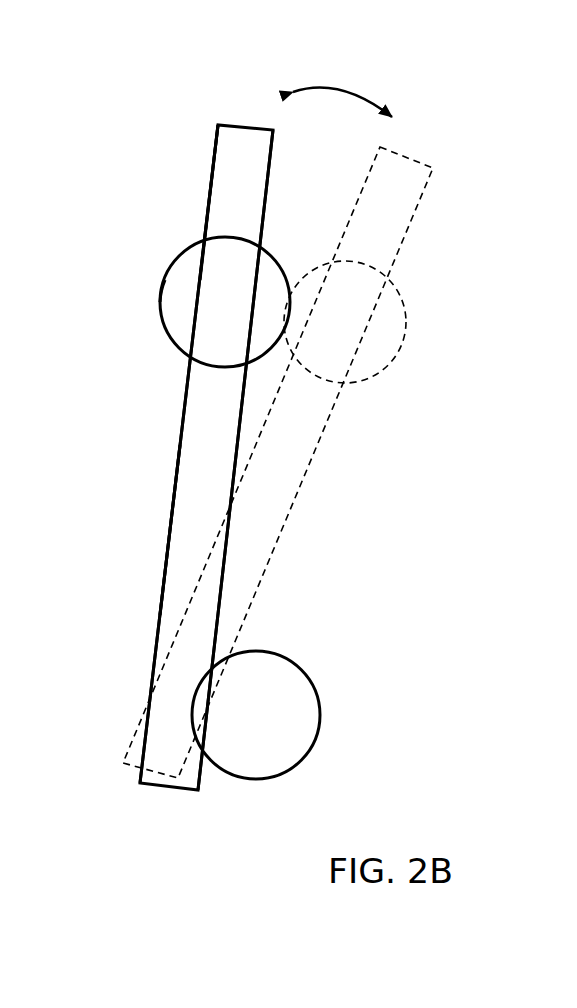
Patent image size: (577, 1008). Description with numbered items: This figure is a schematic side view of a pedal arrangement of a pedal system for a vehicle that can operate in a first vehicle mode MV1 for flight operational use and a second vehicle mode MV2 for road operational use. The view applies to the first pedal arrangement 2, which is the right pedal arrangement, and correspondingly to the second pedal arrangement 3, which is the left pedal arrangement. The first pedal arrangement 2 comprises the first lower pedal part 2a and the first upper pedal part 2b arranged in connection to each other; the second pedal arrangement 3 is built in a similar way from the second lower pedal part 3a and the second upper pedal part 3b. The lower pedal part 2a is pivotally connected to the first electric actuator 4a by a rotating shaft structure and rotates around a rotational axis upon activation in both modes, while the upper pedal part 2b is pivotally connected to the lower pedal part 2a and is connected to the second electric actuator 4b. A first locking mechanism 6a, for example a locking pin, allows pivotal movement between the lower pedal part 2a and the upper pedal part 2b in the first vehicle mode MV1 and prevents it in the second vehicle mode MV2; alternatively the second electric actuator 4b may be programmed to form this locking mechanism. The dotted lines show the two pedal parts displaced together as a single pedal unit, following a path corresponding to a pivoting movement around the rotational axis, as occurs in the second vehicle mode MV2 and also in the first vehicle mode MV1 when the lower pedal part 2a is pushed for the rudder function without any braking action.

The first pedal arrangement 2 is at (458, 113).
The second pedal arrangement 3 is at (458, 113).
The first lower pedal part 2a is at (178, 605).
The first upper pedal part 2b is at (230, 145).
The second lower pedal part 3a is at (167, 517).
The second upper pedal part 3b is at (200, 198).
The first electric actuator 4a is at (272, 675).
The second electric actuator 4b is at (188, 305).
The first locking mechanism 6a is at (148, 273).
The first vehicle mode MV1 is at (348, 480).
The second vehicle mode MV2 is at (429, 314).